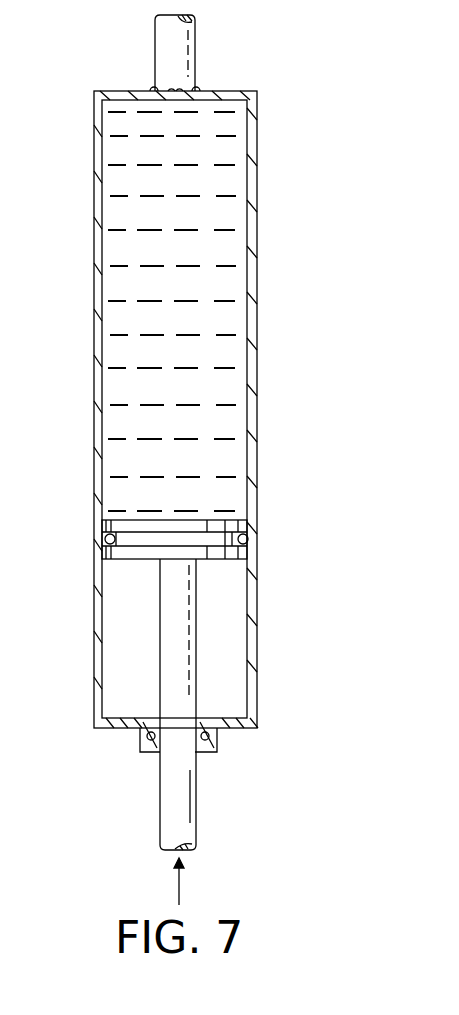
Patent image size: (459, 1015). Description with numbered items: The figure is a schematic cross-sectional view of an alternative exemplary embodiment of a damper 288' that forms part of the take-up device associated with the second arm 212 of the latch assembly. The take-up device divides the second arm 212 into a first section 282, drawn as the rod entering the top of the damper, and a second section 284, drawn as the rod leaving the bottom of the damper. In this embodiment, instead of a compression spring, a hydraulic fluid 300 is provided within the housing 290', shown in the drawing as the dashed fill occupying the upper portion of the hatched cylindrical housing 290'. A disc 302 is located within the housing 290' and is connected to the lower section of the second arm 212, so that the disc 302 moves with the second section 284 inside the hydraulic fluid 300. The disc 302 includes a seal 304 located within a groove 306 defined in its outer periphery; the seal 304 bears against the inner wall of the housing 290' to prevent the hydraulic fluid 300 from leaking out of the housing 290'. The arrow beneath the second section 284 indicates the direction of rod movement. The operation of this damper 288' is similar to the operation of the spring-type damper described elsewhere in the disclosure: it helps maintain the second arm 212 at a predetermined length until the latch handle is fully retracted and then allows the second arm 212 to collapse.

The first section 282 is at (177, 68).
The damper 288' is at (192, 460).
The hydraulic fluid 300 is at (232, 322).
The housing 290' is at (225, 419).
The disc 302 is at (190, 556).
The seal 304 is at (243, 538).
The groove 306 is at (148, 533).
The second section 284 is at (178, 704).
The second arm 212 is at (160, 798).